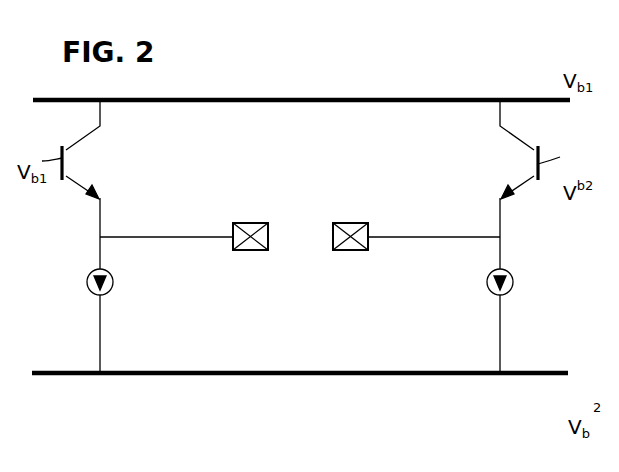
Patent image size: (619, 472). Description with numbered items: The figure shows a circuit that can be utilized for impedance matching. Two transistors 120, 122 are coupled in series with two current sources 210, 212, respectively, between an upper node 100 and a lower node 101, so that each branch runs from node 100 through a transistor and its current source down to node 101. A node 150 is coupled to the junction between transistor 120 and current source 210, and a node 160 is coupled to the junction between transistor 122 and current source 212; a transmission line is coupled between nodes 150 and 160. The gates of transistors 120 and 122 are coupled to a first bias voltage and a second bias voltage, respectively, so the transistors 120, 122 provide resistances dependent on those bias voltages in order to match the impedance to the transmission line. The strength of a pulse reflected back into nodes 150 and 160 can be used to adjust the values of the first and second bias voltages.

The node 100 is at (355, 100).
The node 101 is at (370, 375).
The transistor 120 is at (82, 139).
The transistor 122 is at (520, 133).
The node 150 is at (251, 223).
The node 160 is at (351, 223).
The current source 210 is at (87, 277).
The current source 212 is at (514, 278).